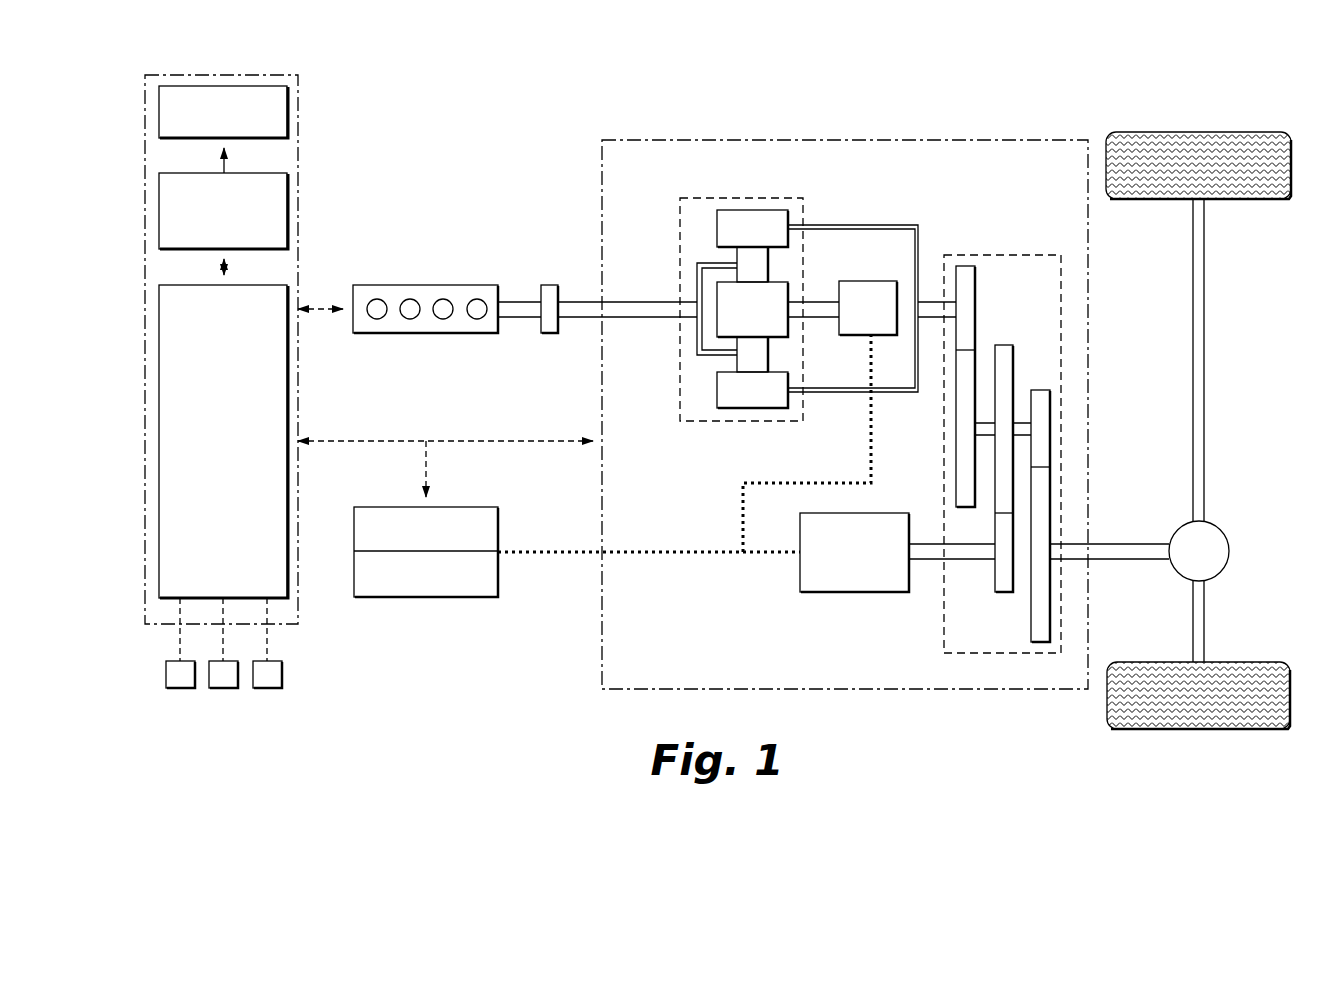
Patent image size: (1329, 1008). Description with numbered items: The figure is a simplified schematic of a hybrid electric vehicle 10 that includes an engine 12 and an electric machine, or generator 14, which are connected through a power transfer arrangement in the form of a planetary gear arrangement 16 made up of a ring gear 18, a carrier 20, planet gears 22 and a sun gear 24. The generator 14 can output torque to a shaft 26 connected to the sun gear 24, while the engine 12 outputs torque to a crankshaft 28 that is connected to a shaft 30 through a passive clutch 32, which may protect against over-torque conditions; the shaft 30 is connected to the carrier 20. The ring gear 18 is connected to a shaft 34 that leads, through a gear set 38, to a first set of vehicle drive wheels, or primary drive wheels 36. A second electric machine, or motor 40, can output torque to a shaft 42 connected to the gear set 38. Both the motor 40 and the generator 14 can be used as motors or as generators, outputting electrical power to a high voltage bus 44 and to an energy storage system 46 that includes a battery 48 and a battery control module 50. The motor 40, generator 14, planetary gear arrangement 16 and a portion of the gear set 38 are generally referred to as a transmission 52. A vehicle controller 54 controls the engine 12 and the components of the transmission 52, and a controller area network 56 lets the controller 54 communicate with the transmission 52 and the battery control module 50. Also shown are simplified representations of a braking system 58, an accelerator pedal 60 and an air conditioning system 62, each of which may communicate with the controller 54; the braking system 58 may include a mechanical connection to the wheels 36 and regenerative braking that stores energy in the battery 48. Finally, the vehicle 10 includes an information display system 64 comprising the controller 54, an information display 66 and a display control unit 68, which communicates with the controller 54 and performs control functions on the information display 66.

The vehicle 10 is at (1046, 98).
The engine 12 is at (396, 285).
The generator 14 is at (865, 281).
The planetary gear arrangement 16 is at (745, 198).
The ring gear 18 is at (717, 228).
The carrier 20 is at (697, 280).
The planet gears 22 is at (737, 262).
The sun gear 24 is at (790, 333).
The shaft 26 is at (820, 302).
The crankshaft 28 is at (527, 318).
The shaft 30 is at (586, 318).
The passive clutch 32 is at (551, 285).
The shaft 34 is at (937, 302).
The primary drive wheels 36 is at (1233, 202).
The gear set 38 is at (1010, 665).
The motor 40 is at (858, 593).
The shaft 42 is at (930, 544).
The high voltage bus 44 is at (687, 549).
The energy storage system 46 is at (352, 545).
The battery 48 is at (475, 507).
The battery control module 50 is at (475, 598).
The transmission 52 is at (598, 180).
The vehicle controller 54 is at (288, 378).
The controller area network 56 is at (372, 440).
The braking system 58 is at (180, 688).
The accelerator pedal 60 is at (223, 688).
The air conditioning system 62 is at (267, 688).
The information display system 64 is at (228, 73).
The information display 66 is at (288, 114).
The display control unit 68 is at (288, 212).